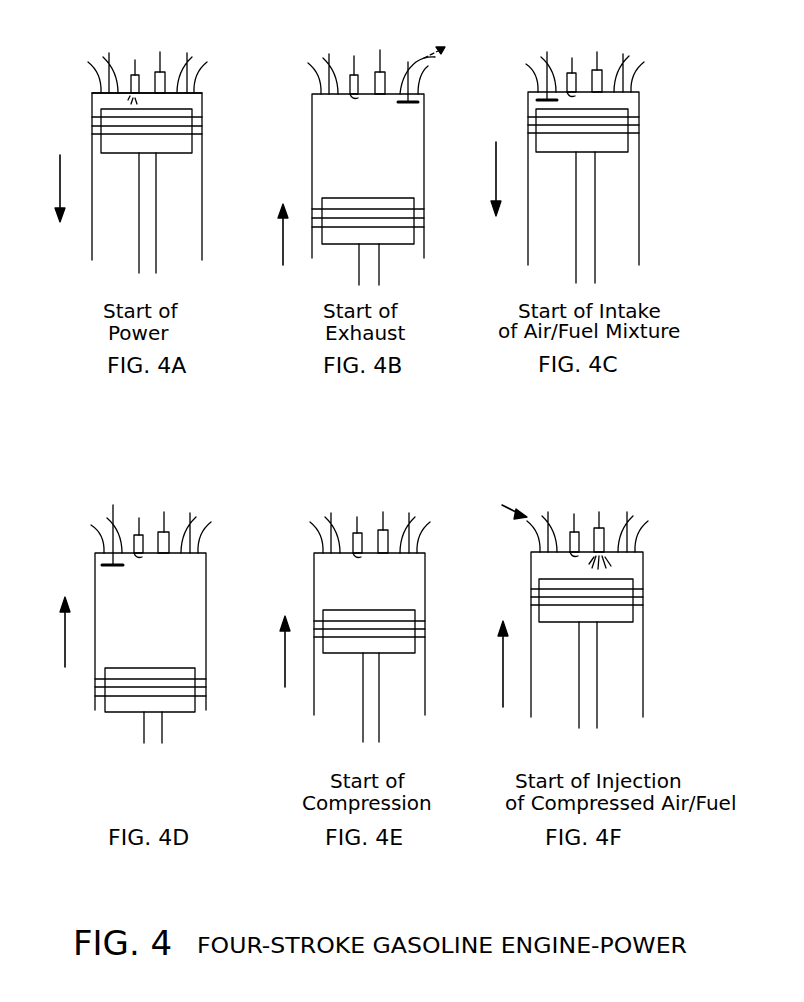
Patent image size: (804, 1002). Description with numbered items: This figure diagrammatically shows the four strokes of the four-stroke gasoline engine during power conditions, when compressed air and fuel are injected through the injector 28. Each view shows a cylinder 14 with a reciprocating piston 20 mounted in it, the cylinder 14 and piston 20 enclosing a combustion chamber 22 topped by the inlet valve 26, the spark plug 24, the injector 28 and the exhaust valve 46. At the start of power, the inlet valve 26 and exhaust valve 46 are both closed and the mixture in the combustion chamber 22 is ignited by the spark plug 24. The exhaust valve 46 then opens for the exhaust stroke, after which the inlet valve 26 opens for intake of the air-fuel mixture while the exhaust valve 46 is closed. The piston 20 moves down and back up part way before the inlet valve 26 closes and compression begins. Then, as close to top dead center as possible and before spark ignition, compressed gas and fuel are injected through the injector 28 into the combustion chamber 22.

The cylinder 14 is at (202, 172).
The piston 20 is at (187, 130).
The combustion chamber 22 is at (97, 105).
The spark plug 24 is at (131, 72).
The inlet valve 26 is at (102, 82).
The fuel and compressed gas injector 28 is at (167, 70).
The exhaust valve 46 is at (198, 85).